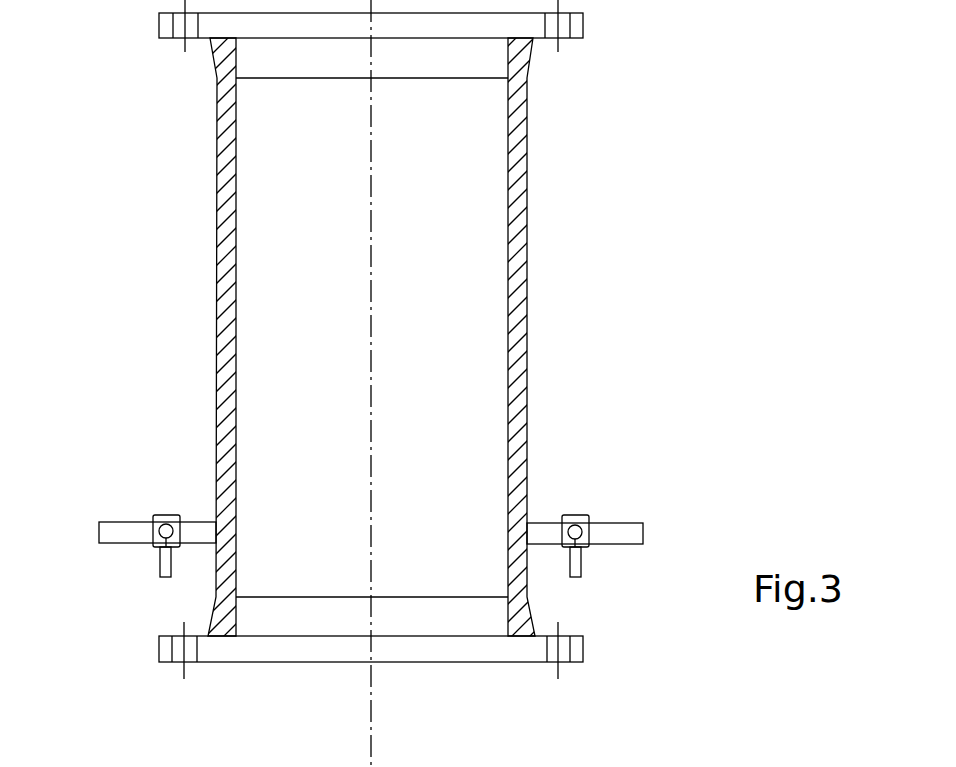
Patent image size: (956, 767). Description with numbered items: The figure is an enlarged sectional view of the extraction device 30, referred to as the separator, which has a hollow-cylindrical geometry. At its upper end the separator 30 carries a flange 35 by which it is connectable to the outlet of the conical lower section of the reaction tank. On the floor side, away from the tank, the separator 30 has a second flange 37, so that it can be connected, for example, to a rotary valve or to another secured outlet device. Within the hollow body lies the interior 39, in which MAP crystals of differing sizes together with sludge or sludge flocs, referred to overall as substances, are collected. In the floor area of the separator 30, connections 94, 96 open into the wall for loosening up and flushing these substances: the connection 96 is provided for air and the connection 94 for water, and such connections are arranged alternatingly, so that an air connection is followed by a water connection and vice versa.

The extraction device 30 is at (478, 383).
The flange 35 is at (580, 40).
The flange 37 is at (583, 662).
The interior 39 is at (478, 383).
The connection 94 is at (122, 525).
The connection 96 is at (612, 528).